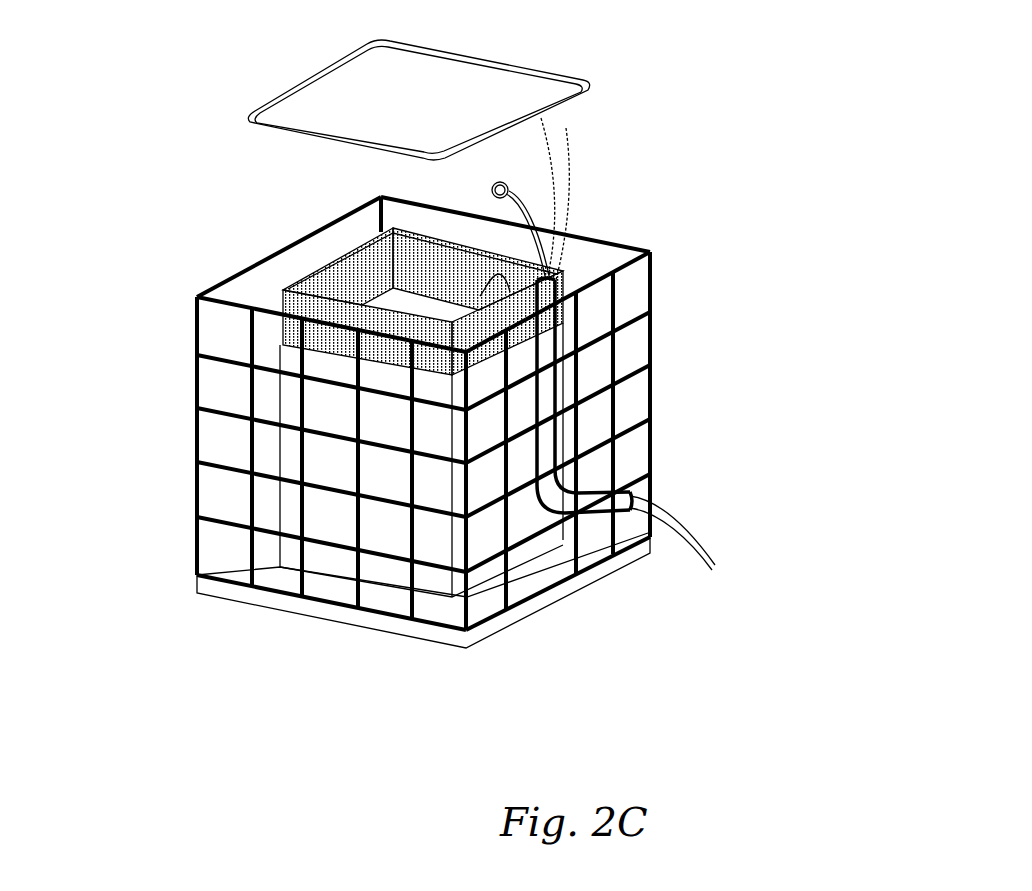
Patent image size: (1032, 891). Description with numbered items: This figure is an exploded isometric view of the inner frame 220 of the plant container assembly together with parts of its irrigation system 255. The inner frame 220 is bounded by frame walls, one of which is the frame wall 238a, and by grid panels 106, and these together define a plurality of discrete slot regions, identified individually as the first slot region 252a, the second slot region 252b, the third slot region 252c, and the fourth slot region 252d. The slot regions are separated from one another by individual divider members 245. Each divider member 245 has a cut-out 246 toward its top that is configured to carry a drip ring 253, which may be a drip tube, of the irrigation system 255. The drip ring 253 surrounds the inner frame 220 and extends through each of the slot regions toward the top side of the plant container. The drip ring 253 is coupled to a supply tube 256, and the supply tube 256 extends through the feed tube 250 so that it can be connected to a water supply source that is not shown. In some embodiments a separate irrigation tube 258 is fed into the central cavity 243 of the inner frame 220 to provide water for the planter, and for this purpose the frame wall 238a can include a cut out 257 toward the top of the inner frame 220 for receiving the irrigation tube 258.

The grid panels 106 is at (227, 351).
The inner frame 220 is at (293, 413).
The frame wall 238a is at (490, 572).
The central cavity 243 is at (396, 379).
The divider members 245 is at (380, 215).
The cut-out 246 is at (383, 284).
The feed tube 250 is at (622, 500).
The first slot region 252a is at (572, 287).
The second slot region 252b is at (308, 306).
The third slot region 252c is at (372, 281).
The fourth slot region 252d is at (472, 222).
The drip ring 253 is at (588, 86).
The irrigation system 255 is at (229, 118).
The supply tube 256 is at (567, 152).
The cut out 257 is at (480, 296).
The irrigation tube 258 is at (540, 207).